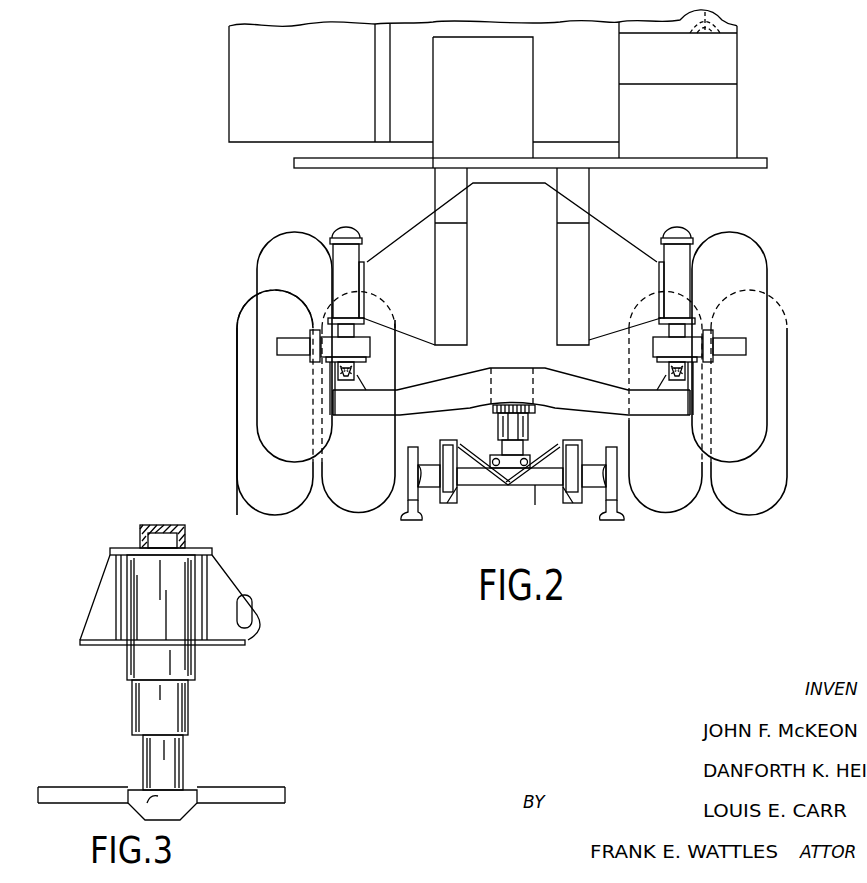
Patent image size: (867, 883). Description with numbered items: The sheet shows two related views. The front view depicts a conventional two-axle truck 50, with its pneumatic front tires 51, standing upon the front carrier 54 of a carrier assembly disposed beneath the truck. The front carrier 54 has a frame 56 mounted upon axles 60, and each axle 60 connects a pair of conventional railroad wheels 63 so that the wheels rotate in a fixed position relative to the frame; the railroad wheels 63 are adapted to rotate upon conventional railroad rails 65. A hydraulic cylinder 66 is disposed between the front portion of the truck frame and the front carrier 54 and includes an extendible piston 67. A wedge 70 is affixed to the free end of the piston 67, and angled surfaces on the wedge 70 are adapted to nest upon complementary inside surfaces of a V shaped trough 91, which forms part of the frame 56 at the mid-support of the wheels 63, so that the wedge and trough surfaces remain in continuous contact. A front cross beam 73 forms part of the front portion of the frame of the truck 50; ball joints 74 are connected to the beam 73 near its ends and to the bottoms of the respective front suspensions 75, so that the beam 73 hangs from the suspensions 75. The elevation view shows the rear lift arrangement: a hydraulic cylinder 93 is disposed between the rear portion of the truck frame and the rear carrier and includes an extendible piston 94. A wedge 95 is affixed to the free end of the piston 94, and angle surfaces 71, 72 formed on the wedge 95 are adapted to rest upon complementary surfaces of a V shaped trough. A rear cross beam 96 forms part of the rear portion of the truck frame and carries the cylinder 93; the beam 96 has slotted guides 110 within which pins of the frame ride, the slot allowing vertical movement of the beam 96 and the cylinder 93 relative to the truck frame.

In FIG. 2, the two-axle truck 50 is at (229, 96).
In FIG. 2, the pneumatic front tires 51 is at (760, 246).
In FIG. 2, the front carrier 54 is at (492, 492).
In FIG. 2, the frame 56 is at (458, 506).
In FIG. 2, the axle 60 is at (537, 480).
In FIG. 2, the railroad wheels 63 is at (400, 477).
In FIG. 2, the railroad rails 65 is at (413, 512).
In FIG. 2, the hydraulic cylinder 66 is at (492, 374).
In FIG. 2, the extendible piston 67 is at (527, 438).
In FIG. 2, the wedge 70 is at (505, 487).
In FIG. 2, the front cross beam 73 is at (577, 374).
In FIG. 2, the ball joints 74 is at (356, 376).
In FIG. 2, the front suspensions 75 is at (346, 228).
In FIG. 2, the V shaped trough 91 is at (535, 505).
In FIG. 3, the angled surface 71 is at (135, 813).
In FIG. 3, the angled surface 72 is at (190, 812).
In FIG. 3, the hydraulic cylinder 93 is at (196, 664).
In FIG. 3, the extendible piston 94 is at (185, 765).
In FIG. 3, the wedge 95 is at (152, 803).
In FIG. 3, the rear cross beam 96 is at (231, 572).
In FIG. 3, the slotted guides 110 is at (247, 590).